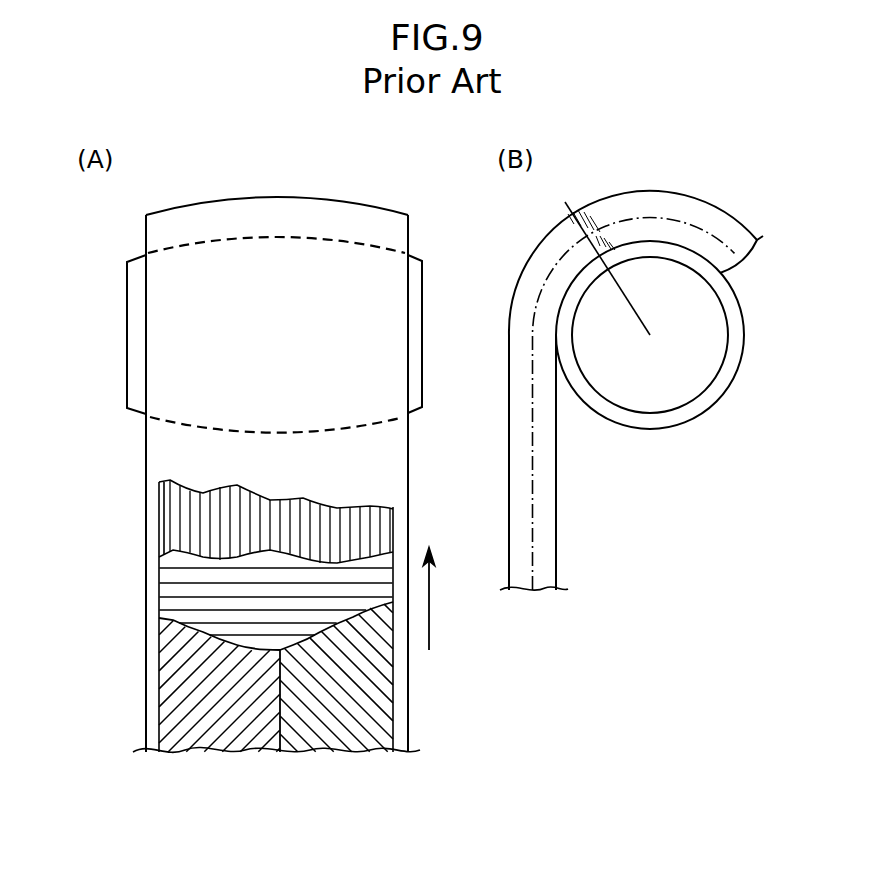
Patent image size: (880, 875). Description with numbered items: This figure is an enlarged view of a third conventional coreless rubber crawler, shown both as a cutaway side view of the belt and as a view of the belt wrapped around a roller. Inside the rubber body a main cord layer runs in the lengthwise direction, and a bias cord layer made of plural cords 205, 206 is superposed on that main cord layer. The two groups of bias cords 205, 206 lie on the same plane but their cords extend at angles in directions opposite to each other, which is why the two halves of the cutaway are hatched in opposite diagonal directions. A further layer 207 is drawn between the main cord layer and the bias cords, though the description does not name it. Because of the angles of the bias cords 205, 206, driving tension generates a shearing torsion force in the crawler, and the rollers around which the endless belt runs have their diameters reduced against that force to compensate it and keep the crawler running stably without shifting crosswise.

The bias cord 205 is at (165, 717).
The bias cord 206 is at (388, 705).
The intermediate layer 207 is at (162, 597).